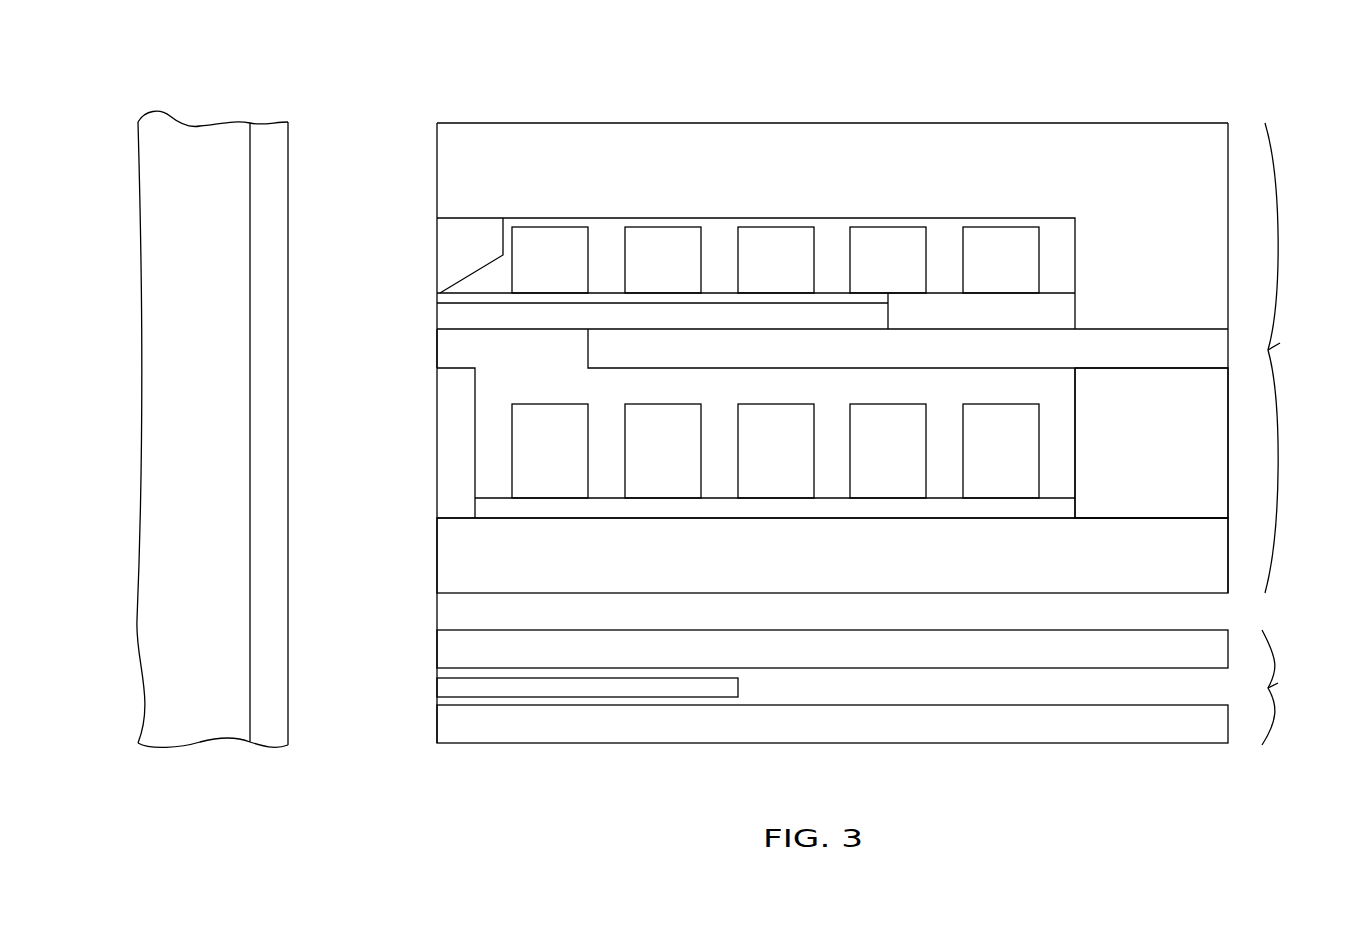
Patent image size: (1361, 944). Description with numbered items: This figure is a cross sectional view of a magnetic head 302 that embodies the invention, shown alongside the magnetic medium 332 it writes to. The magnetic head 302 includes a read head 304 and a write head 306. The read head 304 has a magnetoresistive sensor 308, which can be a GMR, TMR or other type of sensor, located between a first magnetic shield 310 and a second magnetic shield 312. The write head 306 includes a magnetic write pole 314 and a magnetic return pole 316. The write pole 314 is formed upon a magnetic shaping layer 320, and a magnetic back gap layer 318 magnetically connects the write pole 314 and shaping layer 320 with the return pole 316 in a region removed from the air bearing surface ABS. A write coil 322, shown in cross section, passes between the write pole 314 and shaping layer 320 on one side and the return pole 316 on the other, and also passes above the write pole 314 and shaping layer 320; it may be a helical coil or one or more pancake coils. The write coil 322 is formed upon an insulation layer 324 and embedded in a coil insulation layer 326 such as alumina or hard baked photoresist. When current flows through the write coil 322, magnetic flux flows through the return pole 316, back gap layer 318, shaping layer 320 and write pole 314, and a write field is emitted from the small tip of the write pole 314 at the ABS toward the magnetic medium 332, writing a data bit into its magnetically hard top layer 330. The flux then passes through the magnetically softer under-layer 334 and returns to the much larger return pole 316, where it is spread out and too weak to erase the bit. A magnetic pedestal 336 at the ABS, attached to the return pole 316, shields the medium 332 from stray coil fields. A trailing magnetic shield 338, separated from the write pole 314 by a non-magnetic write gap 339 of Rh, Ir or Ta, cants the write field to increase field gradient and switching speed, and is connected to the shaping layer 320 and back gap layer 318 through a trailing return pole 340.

The magnetic head 302 is at (926, 124).
The read head 304 is at (1272, 653).
The write head 306 is at (1272, 150).
The magnetoresistive sensor 308 is at (718, 688).
The first magnetic shield 310 is at (832, 724).
The second magnetic shield 312 is at (832, 649).
The magnetic write pole 314 is at (447, 321).
The magnetic return pole 316 is at (832, 555).
The magnetic back gap layer 318 is at (1151, 443).
The magnetic shaping layer 320 is at (908, 348).
The write coil 322 is at (775, 362).
The insulation layer 324 is at (1093, 496).
The coil insulation layer 326 is at (830, 237).
The magnetically hard top layer 330 is at (280, 143).
The magnetic medium 332 is at (193, 112).
The magnetically softer under-layer 334 is at (212, 429).
The magnetic pedestal 336 is at (448, 414).
The trailing magnetic shield 338 is at (466, 257).
The non-magnetic write gap 339 is at (447, 297).
The trailing return pole 340 is at (832, 146).
The air bearing surface ABS is at (437, 350).